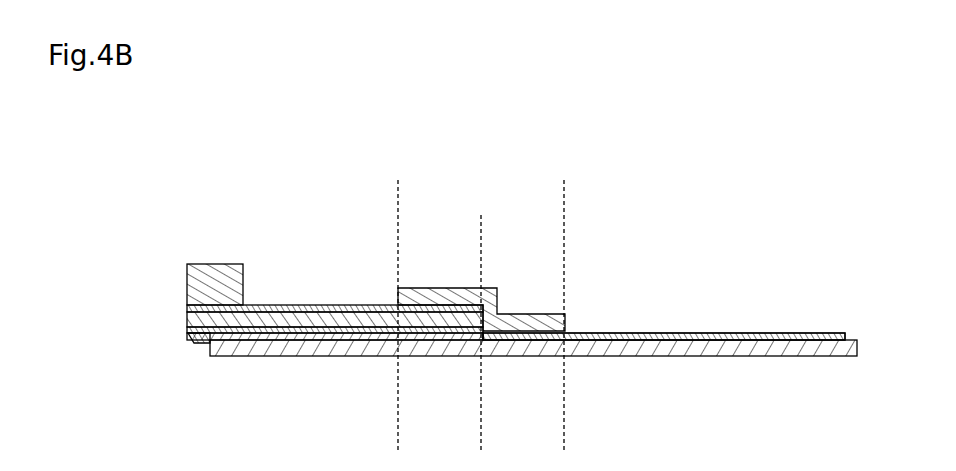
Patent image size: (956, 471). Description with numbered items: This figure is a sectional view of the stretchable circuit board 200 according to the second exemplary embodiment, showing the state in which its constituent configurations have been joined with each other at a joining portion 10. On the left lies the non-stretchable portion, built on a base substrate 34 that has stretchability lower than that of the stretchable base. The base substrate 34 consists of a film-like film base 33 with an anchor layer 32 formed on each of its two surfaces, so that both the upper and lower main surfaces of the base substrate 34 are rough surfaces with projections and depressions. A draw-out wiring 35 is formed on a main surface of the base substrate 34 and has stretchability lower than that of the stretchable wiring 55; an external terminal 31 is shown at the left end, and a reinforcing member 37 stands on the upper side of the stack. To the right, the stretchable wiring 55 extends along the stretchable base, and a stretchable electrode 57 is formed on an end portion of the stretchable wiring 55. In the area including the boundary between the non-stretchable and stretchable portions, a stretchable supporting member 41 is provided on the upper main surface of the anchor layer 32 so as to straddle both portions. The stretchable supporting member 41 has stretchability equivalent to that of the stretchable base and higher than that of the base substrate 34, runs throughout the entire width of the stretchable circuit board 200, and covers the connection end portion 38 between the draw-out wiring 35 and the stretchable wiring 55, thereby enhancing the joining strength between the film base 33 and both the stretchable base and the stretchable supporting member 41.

The stretchable circuit board 200 is at (503, 134).
The joining portion 10 is at (533, 377).
The connection end portion 38 is at (455, 345).
The external terminal 31 is at (194, 343).
The anchor layer 32 is at (288, 305).
The film base 33 is at (387, 247).
The base substrate 34 is at (335, 313).
The draw-out wiring 35 is at (353, 341).
The reinforcing member 37 is at (222, 263).
The stretchable supporting member 41 is at (430, 288).
The stretchable wiring 55 is at (632, 333).
The stretchable electrode 57 is at (805, 333).